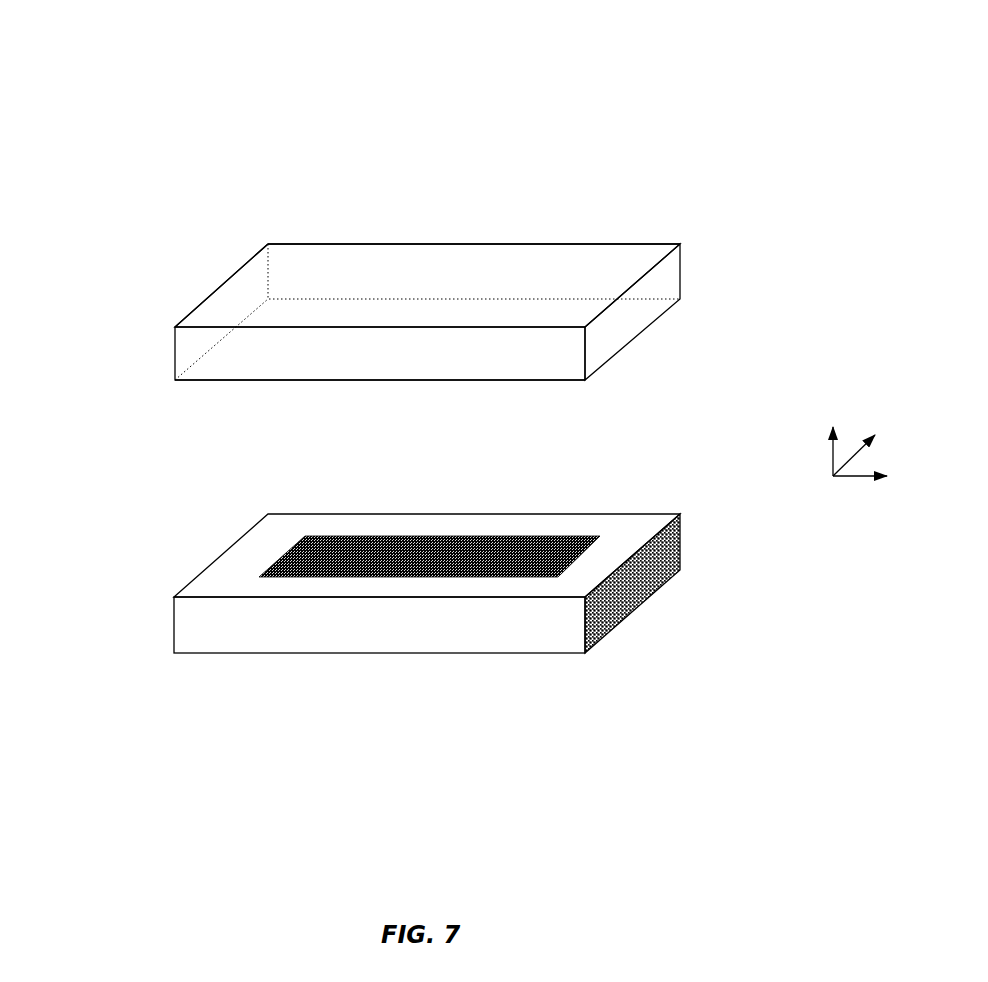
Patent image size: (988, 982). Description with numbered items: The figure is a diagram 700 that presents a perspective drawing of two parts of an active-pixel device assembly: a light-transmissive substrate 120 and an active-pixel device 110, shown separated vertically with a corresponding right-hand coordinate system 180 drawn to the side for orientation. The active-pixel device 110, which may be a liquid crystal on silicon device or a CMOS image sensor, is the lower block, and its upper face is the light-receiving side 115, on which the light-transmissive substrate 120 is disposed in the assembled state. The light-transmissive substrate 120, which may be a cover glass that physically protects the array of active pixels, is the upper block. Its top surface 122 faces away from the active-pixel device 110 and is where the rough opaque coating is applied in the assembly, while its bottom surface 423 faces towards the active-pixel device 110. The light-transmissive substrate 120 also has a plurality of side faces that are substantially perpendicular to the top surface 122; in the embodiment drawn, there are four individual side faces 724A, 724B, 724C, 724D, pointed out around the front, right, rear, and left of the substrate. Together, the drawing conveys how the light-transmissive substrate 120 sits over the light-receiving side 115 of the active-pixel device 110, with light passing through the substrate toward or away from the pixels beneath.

The diagram 700 is at (150, 72).
The light-transmissive substrate 120 is at (427, 314).
The top surface 122 is at (360, 283).
The bottom surface 423 is at (360, 343).
The side face 724A is at (492, 353).
The side face 724B is at (633, 310).
The side face 724C is at (588, 268).
The side face 724D is at (218, 316).
The active-pixel device 110 is at (128, 641).
The light-receiving side 115 is at (227, 587).
The right-hand coordinate system 180 is at (858, 518).